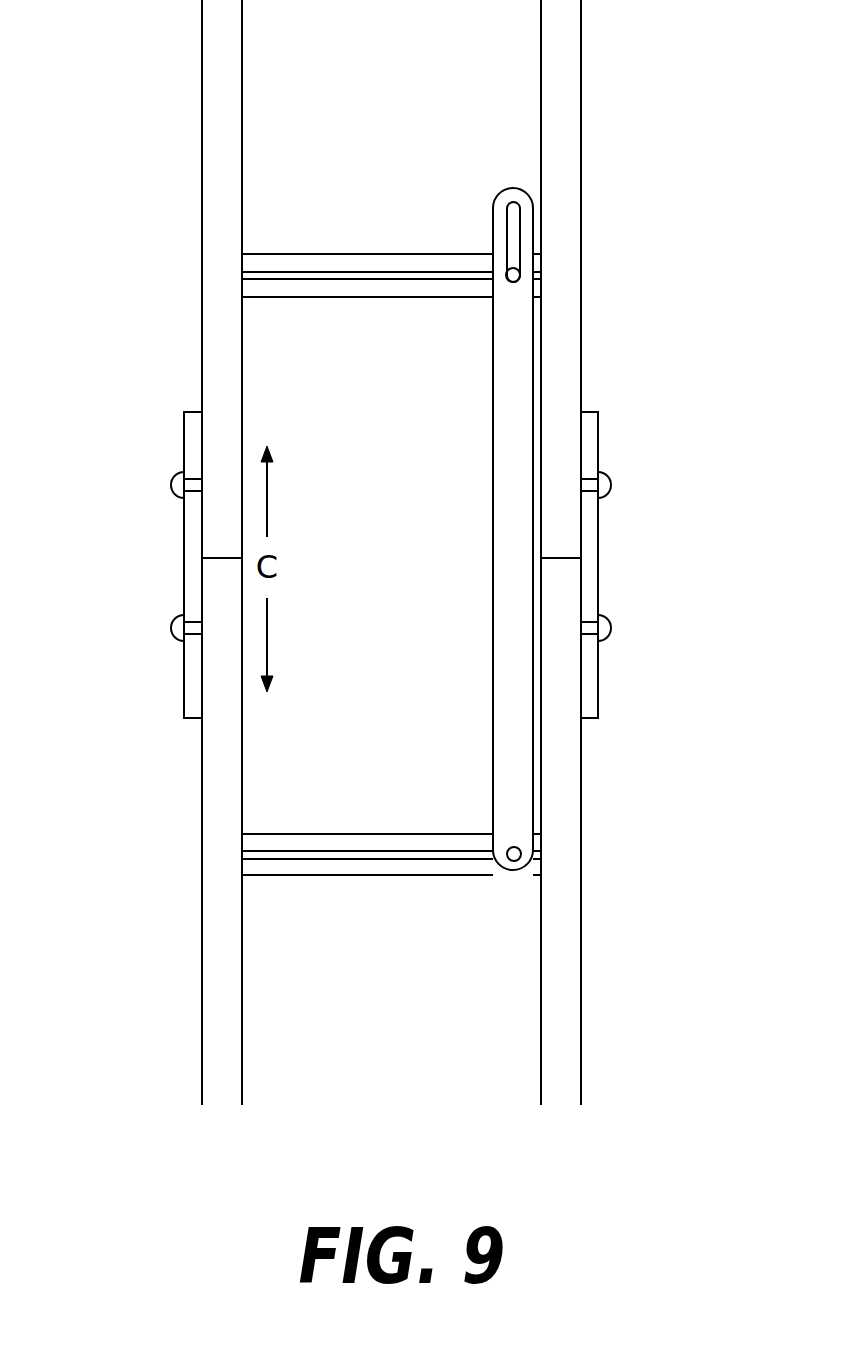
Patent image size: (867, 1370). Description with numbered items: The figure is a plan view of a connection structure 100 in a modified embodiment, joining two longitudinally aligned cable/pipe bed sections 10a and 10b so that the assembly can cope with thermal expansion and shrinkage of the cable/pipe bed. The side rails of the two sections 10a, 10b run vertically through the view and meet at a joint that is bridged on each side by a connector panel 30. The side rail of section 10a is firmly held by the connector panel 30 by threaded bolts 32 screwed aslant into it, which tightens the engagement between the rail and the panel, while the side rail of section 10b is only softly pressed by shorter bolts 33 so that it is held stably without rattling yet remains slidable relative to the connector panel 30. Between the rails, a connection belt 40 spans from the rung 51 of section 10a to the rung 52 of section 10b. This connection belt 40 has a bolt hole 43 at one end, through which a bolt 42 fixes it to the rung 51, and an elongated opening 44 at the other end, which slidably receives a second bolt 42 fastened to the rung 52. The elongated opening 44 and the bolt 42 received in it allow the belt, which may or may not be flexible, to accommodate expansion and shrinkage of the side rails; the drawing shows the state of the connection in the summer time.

The cable/pipe bed section 10a is at (562, 957).
The cable/pipe bed section 10b is at (563, 143).
The connector panel 30 is at (193, 562).
The threaded bolt 32 is at (173, 638).
The bolt 33 is at (173, 488).
The connection structure 100 is at (612, 558).
The connection belt 40 is at (508, 572).
The bolt 42 is at (505, 277).
The bolt hole 43 is at (500, 848).
The elongated opening 44 is at (510, 213).
The rung 51 is at (298, 867).
The rung 52 is at (303, 265).